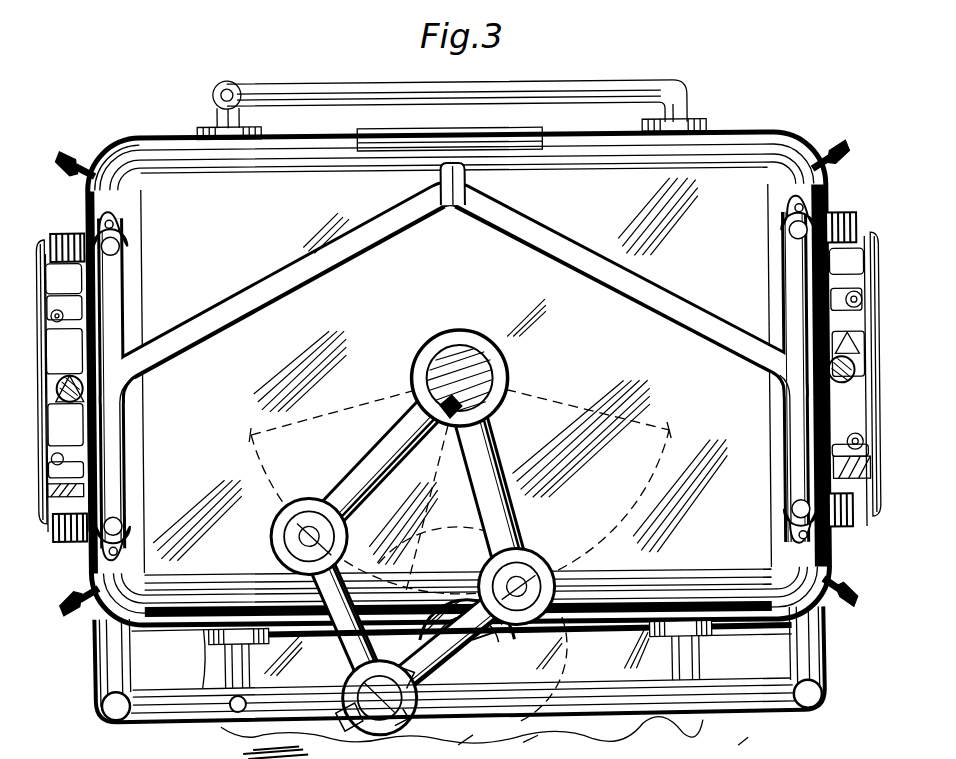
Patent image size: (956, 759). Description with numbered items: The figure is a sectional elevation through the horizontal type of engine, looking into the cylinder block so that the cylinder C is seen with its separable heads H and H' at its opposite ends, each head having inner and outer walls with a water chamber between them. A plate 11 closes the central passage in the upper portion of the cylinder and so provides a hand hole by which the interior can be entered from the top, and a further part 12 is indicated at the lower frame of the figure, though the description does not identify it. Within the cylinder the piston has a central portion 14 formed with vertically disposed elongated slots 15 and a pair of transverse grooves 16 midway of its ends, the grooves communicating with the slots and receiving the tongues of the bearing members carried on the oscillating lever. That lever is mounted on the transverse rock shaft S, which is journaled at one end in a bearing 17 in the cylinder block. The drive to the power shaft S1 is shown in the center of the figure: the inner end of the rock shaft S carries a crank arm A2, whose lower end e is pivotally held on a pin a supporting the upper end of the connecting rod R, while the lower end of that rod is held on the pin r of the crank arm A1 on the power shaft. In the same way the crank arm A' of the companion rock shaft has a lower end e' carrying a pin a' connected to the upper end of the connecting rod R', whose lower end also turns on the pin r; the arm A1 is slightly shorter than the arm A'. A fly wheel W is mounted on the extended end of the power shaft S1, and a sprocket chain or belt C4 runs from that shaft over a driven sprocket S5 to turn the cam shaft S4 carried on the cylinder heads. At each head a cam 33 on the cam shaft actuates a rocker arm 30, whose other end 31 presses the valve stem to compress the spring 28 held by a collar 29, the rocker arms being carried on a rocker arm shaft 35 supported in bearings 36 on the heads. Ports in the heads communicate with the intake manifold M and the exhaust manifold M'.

The plate 11 is at (548, 126).
The lower supporting frame 12 is at (803, 655).
The central portion of piston 14 is at (462, 737).
The elongated slots 15 is at (454, 747).
The transverse grooves 16 is at (522, 747).
The bearing 17 is at (735, 748).
The spring 28 is at (80, 240).
The collar 29 is at (66, 236).
The rocker arm 30 is at (43, 278).
The rocker arm end 31 is at (46, 240).
The cam 33 is at (87, 393).
The rocker arm shaft 35 is at (64, 300).
The bearing 36 is at (66, 312).
The cam shaft S4 is at (83, 372).
The driven sprocket S5 is at (455, 365).
The sprocket chain or belt C4 is at (84, 490).
The cylinder C is at (456, 378).
The cylinder head H is at (408, 116).
The cylinder head H' is at (450, 151).
The intake manifold M is at (764, 377).
The exhaust manifold M' is at (454, 354).
The rock shaft S is at (457, 380).
The crank arm A2 is at (373, 488).
The crank arm A' is at (502, 480).
The crank arm A1 is at (480, 666).
The pin a is at (297, 536).
The lower end of crank arm e is at (281, 538).
The pin a' is at (517, 573).
The lower end of crank arm e' is at (537, 566).
The connecting rod R is at (343, 615).
The connecting rod R' is at (458, 645).
The pin r is at (352, 681).
The power shaft S1 is at (470, 640).
The fly wheel W is at (618, 658).